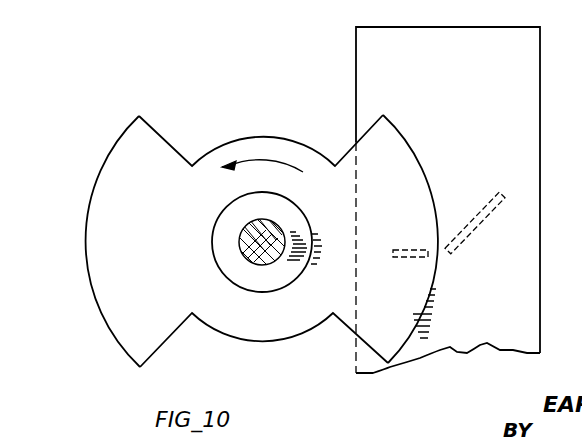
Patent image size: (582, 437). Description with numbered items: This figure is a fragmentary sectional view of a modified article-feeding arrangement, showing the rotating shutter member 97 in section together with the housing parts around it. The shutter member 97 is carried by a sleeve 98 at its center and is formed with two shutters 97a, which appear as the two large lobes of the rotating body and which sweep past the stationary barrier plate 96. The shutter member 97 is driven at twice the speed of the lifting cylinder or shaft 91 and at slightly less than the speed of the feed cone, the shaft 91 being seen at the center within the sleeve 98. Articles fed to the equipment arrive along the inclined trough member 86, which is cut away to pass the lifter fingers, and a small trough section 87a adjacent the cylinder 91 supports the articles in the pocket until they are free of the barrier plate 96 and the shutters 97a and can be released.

The shutter member 97 is at (268, 140).
The shutters 97a is at (98, 249).
The sleeve 98 is at (240, 239).
The shaft 91 is at (262, 266).
The stationary barrier plate 96 is at (528, 119).
The trough member 86 is at (480, 220).
The small trough section 87a is at (414, 258).